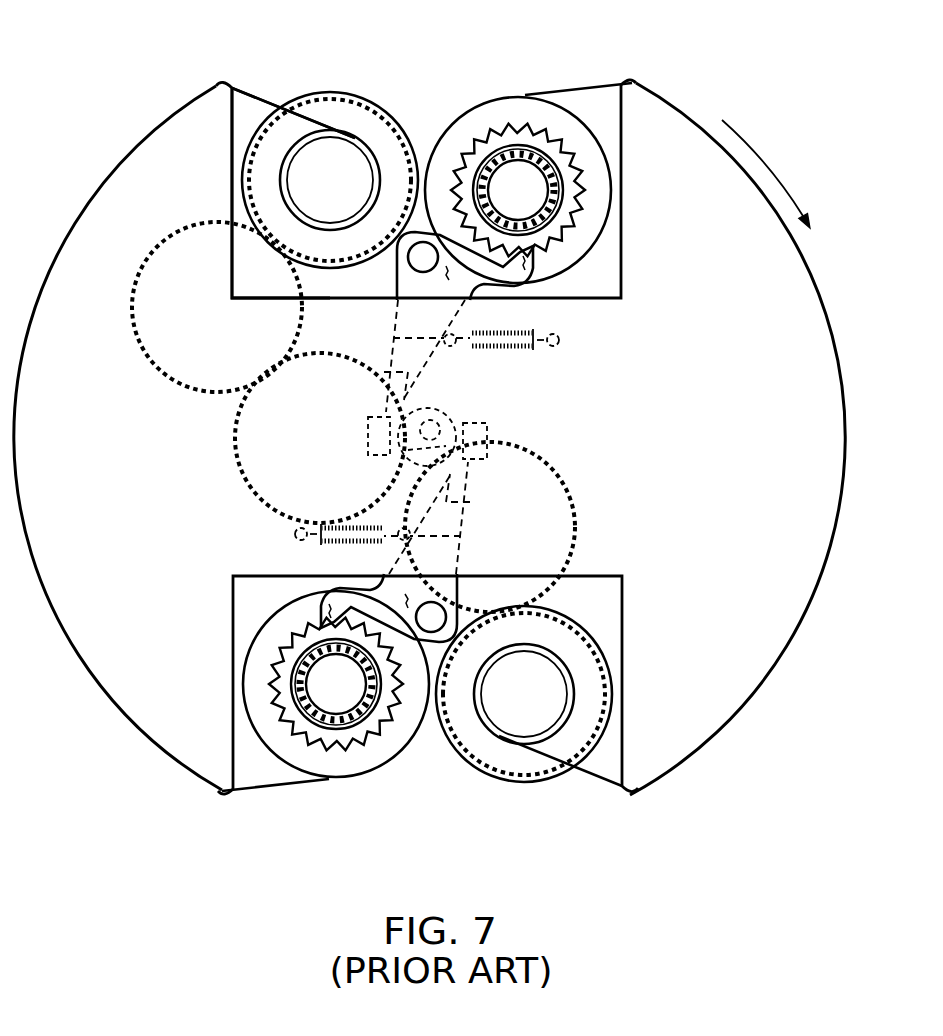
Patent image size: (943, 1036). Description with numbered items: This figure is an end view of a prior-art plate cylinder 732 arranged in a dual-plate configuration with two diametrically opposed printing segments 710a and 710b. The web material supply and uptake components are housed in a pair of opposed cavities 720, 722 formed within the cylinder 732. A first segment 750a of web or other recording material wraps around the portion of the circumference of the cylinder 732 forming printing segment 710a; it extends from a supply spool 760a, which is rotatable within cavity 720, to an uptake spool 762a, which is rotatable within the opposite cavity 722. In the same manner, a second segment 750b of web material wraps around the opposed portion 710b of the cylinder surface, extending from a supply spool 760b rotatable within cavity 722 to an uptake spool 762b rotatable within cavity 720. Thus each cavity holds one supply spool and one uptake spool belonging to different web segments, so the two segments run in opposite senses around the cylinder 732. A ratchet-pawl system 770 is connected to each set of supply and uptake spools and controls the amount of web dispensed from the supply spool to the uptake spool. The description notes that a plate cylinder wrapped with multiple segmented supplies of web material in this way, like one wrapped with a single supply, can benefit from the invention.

The printing segment 710a is at (806, 606).
The printing segment 710b is at (72, 654).
The cavity 720 is at (424, 151).
The cavity 722 is at (431, 720).
The cylinder 732 is at (803, 293).
The first segment of web material 750a is at (563, 86).
The second segment of web material 750b is at (265, 100).
The supply spool 760a is at (490, 142).
The supply spool 760b is at (338, 727).
The uptake spool 762a is at (573, 689).
The uptake spool 762b is at (355, 138).
The ratchet-pawl system 770 is at (392, 318).